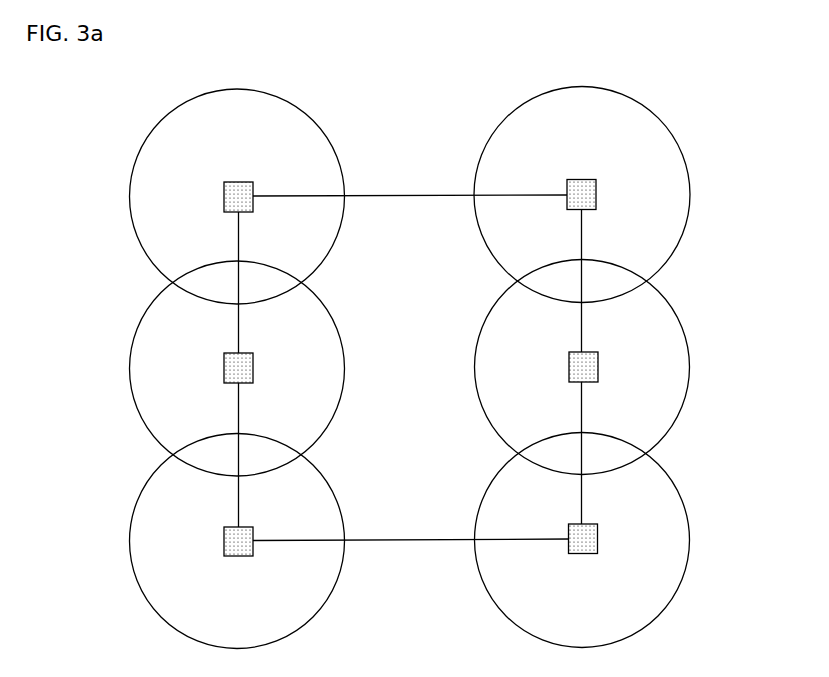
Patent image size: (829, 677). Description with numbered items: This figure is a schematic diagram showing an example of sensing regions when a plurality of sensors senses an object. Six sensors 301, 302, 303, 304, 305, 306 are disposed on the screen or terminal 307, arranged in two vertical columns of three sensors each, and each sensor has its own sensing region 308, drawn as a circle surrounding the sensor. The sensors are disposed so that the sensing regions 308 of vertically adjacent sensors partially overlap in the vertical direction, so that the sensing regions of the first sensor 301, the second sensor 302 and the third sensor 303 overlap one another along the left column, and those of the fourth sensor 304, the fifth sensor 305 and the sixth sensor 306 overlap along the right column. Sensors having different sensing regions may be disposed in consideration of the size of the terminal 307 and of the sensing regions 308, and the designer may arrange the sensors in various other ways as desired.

The sensor 301 is at (238, 182).
The sensor 302 is at (224, 366).
The sensor 303 is at (224, 538).
The sensor 304 is at (596, 180).
The sensor 305 is at (598, 367).
The sensor 306 is at (598, 537).
The terminal 307 is at (408, 195).
The sensing region 308 is at (145, 140).